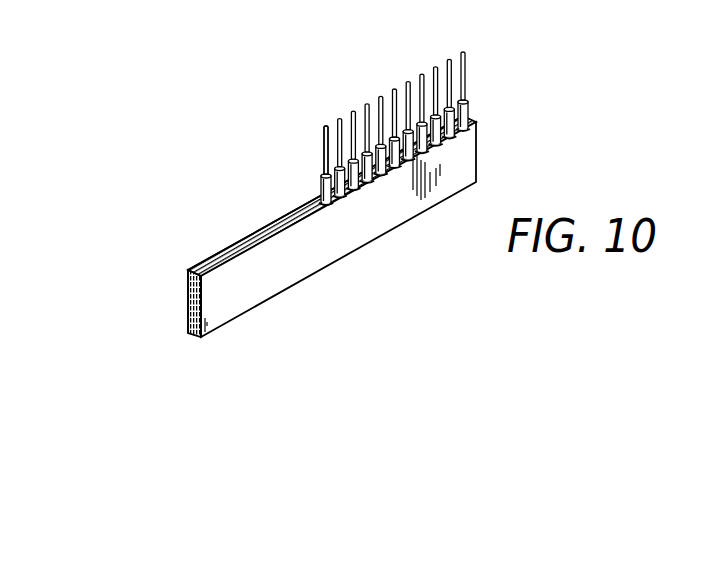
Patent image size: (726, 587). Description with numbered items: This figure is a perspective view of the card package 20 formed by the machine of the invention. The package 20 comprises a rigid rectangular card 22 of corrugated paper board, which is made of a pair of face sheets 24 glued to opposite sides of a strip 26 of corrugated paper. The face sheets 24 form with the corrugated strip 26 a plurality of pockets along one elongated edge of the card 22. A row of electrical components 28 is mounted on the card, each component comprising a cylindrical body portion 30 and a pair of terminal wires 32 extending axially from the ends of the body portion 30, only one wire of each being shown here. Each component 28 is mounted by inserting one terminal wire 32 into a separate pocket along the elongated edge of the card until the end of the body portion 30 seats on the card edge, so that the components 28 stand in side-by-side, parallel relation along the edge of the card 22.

The card package 20 is at (212, 205).
The rigid rectangular card 22 is at (188, 310).
The face sheets 24 is at (190, 271).
The strip of corrugated paper 26 is at (258, 230).
The electrical component 28 is at (318, 170).
The cylindrical body portion 30 is at (332, 203).
The terminal wire 32 is at (323, 172).